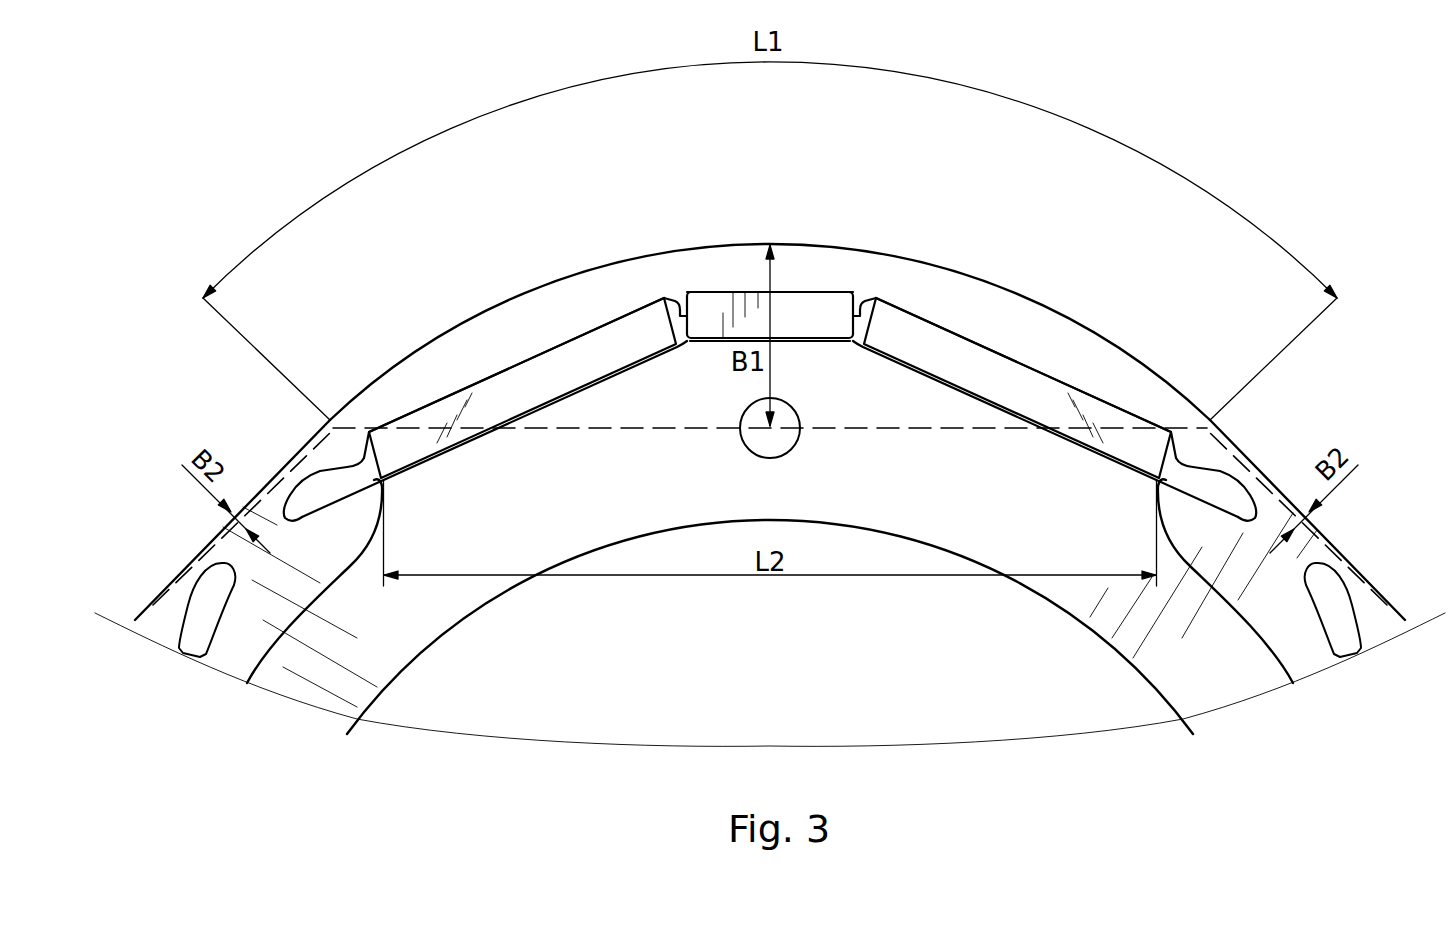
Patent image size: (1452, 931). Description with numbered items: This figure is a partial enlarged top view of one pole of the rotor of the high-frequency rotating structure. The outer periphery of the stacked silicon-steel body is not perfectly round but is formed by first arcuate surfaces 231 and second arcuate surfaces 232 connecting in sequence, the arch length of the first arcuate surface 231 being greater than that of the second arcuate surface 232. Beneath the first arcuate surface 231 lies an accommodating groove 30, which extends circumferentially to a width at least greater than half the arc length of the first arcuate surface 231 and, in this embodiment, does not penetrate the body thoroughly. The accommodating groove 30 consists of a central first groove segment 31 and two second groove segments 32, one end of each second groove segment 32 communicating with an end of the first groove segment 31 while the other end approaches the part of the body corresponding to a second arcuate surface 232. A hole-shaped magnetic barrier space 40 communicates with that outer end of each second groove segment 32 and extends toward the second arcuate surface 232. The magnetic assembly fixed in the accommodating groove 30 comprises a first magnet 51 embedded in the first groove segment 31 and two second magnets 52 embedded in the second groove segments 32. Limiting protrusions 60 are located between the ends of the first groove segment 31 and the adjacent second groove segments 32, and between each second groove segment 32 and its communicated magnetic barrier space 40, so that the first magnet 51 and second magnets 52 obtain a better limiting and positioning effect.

The accommodating groove 30 is at (909, 301).
The first groove segment 31 is at (810, 290).
The second groove segment 32 is at (587, 333).
The magnetic barrier space 40 is at (313, 487).
The first magnet 51 is at (712, 305).
The second magnet 52 is at (530, 380).
The limiting protrusion 60 is at (675, 300).
The first arcuate surface 231 is at (750, 243).
The second arcuate surface 232 is at (190, 558).